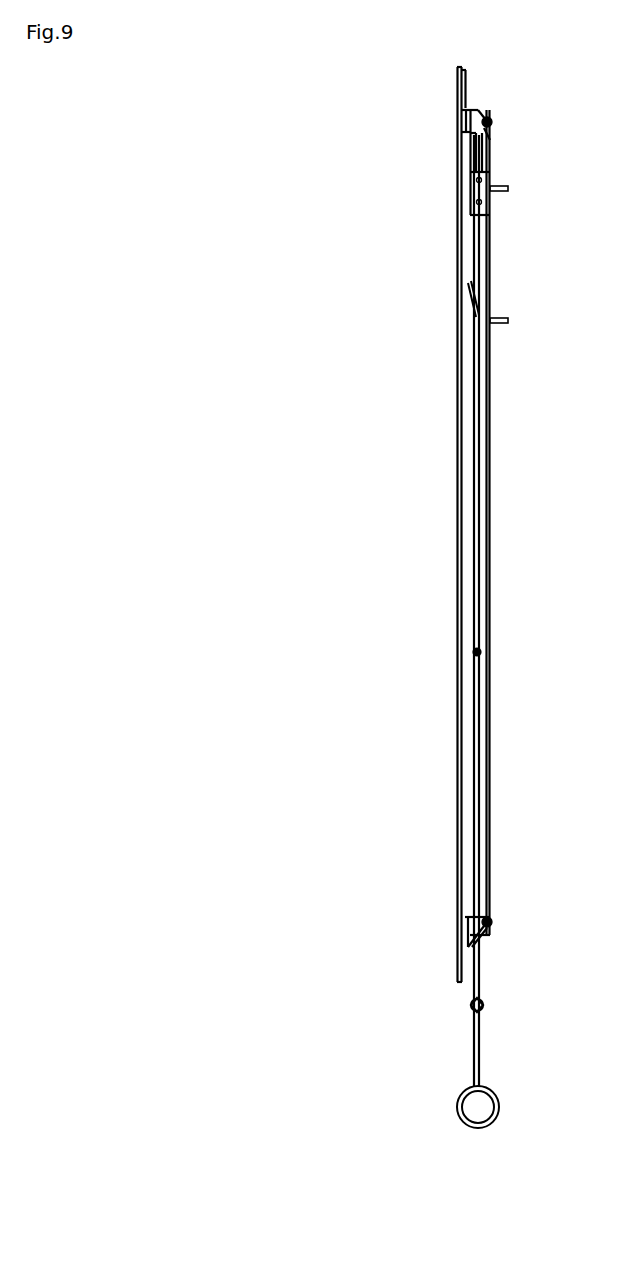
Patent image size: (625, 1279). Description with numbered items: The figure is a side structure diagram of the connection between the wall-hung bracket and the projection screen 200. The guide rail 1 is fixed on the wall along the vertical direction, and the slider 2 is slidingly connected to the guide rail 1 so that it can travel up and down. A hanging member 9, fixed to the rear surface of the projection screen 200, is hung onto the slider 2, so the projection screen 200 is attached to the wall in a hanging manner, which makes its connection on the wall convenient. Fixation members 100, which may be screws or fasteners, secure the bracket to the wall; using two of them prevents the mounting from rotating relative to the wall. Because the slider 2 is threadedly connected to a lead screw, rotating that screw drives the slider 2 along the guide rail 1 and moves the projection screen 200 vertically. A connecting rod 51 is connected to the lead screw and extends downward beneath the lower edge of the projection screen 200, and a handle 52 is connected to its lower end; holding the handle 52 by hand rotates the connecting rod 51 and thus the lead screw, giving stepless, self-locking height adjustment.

The projection screen 200 is at (457, 352).
The guide rail 1 is at (490, 226).
The slider 2 is at (488, 142).
The hanging member 9 is at (481, 116).
The fixation member 100 is at (508, 188).
The connecting rod 51 is at (480, 402).
The handle 52 is at (490, 1090).